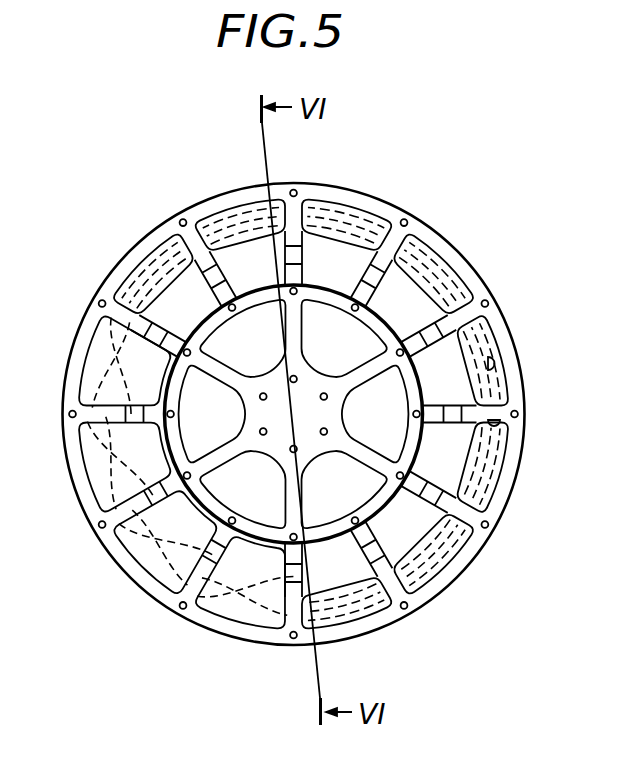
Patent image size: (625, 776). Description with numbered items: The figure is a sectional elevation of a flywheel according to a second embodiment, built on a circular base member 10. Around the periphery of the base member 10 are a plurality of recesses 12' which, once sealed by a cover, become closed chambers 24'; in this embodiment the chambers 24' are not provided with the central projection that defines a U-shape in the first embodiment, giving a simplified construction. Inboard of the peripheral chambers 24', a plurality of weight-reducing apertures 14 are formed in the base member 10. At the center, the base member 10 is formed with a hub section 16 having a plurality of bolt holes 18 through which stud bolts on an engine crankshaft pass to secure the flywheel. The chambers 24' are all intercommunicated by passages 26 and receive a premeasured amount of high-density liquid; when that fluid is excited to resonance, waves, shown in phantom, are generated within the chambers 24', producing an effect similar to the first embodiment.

The circular base member 10 is at (472, 550).
The recesses 12' is at (540, 393).
The weight-reducing apertures 14 is at (197, 402).
The hub section 16 is at (335, 412).
The bolt holes 18 is at (322, 438).
The chambers 24' is at (313, 422).
The passages 26 is at (213, 543).